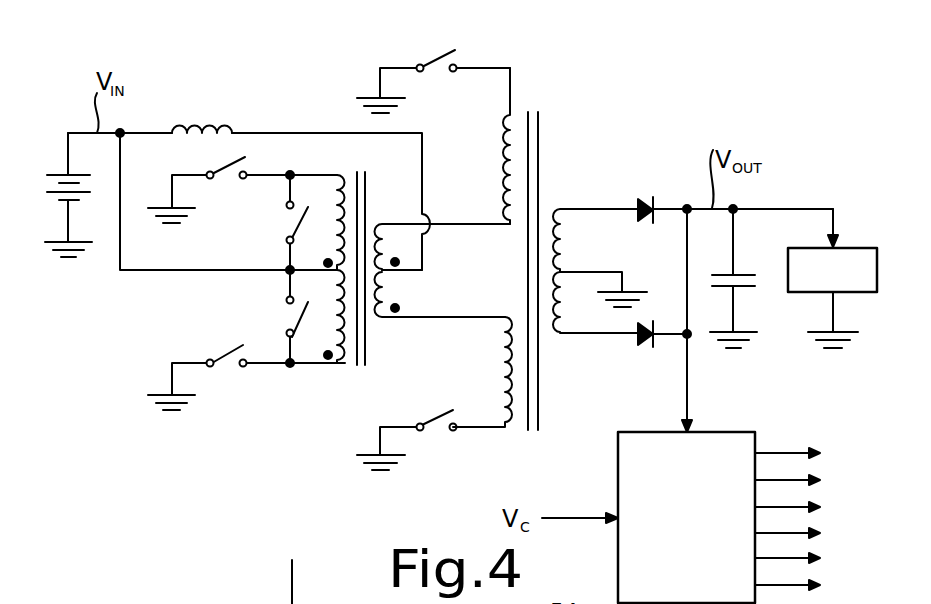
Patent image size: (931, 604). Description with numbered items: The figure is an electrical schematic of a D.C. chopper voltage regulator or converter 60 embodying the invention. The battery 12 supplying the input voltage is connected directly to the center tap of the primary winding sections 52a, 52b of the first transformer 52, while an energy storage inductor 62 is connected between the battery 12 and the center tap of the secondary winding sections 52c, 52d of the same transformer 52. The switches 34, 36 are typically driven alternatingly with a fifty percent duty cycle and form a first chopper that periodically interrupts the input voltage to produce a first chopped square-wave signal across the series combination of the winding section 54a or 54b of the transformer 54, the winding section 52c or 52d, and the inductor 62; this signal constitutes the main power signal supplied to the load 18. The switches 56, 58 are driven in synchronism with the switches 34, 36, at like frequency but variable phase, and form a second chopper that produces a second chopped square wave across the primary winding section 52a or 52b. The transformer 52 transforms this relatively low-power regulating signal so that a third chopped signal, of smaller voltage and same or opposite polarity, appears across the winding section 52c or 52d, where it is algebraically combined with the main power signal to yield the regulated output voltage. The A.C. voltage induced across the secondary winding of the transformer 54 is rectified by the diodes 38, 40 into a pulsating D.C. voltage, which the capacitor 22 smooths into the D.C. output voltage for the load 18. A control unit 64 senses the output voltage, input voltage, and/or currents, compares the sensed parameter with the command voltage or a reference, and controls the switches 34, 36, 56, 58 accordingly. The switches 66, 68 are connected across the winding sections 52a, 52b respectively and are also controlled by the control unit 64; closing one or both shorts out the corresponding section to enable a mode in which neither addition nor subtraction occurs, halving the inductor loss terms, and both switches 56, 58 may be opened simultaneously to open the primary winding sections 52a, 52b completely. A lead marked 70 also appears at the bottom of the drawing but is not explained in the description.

The battery 12 is at (57, 173).
The load 18 is at (857, 248).
The capacitor 22 is at (747, 287).
The switch 34 is at (442, 55).
The switch 36 is at (437, 430).
The diode 38 is at (643, 203).
The diode 40 is at (645, 343).
The first transformer 52 is at (359, 382).
The primary winding section 52a is at (338, 205).
The primary winding section 52b is at (326, 316).
The secondary winding section 52c is at (385, 243).
The secondary winding section 52d is at (385, 292).
The transformer 54 is at (535, 100).
The winding section 54a is at (508, 177).
The winding section 54b is at (510, 375).
The switch 56 is at (232, 163).
The switch 58 is at (242, 347).
The voltage regulator 60 is at (267, 90).
The energy storage inductor 62 is at (197, 127).
The control unit 64 is at (738, 432).
The switch 66 is at (298, 222).
The switch 68 is at (298, 318).
The lead 70 is at (293, 568).